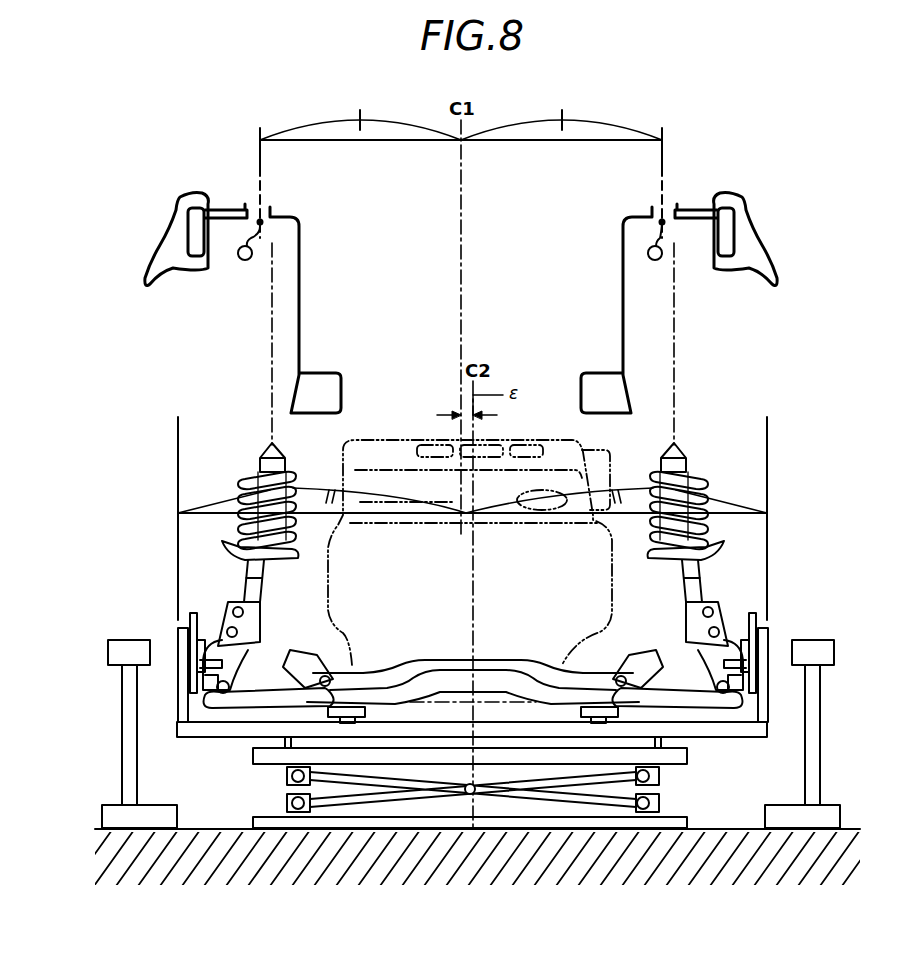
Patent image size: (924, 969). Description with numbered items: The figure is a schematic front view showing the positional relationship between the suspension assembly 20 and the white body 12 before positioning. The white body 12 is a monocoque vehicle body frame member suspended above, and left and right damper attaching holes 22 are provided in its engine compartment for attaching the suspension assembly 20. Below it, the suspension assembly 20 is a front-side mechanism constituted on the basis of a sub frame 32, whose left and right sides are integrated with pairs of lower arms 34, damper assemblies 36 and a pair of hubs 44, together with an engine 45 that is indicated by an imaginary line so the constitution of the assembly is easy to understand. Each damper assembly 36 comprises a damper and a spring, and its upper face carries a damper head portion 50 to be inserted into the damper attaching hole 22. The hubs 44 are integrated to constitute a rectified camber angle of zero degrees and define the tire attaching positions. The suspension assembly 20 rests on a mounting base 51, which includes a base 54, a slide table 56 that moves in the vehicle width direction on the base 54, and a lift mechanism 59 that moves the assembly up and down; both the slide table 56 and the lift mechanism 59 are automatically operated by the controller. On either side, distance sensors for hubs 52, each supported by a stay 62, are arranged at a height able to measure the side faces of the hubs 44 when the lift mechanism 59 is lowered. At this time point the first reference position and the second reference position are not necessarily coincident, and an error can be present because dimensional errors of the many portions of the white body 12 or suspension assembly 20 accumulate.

The white body 12 is at (186, 196).
The damper attaching hole 22 is at (263, 214).
The engine 45 is at (542, 438).
The damper head portion 50 is at (263, 454).
The damper assembly 36 is at (280, 555).
The hub 44 is at (176, 672).
The lower arm 34 is at (270, 690).
The sub frame 32 is at (371, 682).
The suspension assembly 20 is at (513, 668).
The slide table 56 is at (750, 735).
The base 54 is at (690, 757).
The lift mechanism 59 is at (343, 772).
The mounting base 51 is at (499, 713).
The distance sensor for hub 52 is at (131, 650).
The stay 62 is at (130, 730).